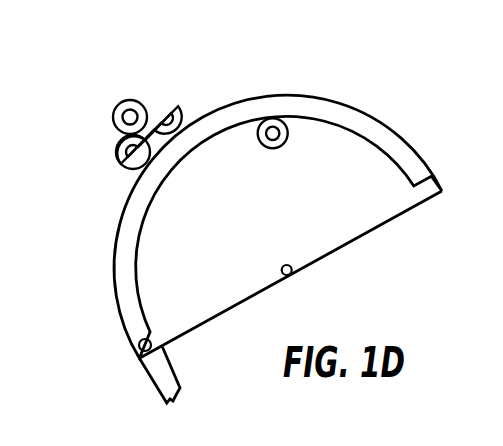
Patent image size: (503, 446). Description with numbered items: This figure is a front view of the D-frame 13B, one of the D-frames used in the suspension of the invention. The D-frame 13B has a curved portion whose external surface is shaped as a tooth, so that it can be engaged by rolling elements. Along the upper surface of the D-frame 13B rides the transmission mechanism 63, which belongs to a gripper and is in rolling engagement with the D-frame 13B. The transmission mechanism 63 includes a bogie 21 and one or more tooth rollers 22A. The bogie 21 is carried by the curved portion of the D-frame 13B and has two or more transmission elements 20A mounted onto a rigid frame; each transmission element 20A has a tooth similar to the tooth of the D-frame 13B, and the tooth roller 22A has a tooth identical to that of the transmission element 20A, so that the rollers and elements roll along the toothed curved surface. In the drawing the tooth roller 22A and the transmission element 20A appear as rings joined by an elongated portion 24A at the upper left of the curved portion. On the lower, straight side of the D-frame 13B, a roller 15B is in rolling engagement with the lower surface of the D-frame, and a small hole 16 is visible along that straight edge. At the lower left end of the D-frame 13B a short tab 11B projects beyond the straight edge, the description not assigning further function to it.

The D-frame 13B is at (368, 128).
The tab 11B is at (173, 378).
The roller 15B is at (272, 146).
The hole 16 is at (291, 272).
The transmission mechanism 63 is at (123, 93).
The bogie 21 is at (114, 135).
The tooth roller 22A is at (118, 103).
The transmission element 20A is at (123, 146).
The slot 24A is at (128, 116).